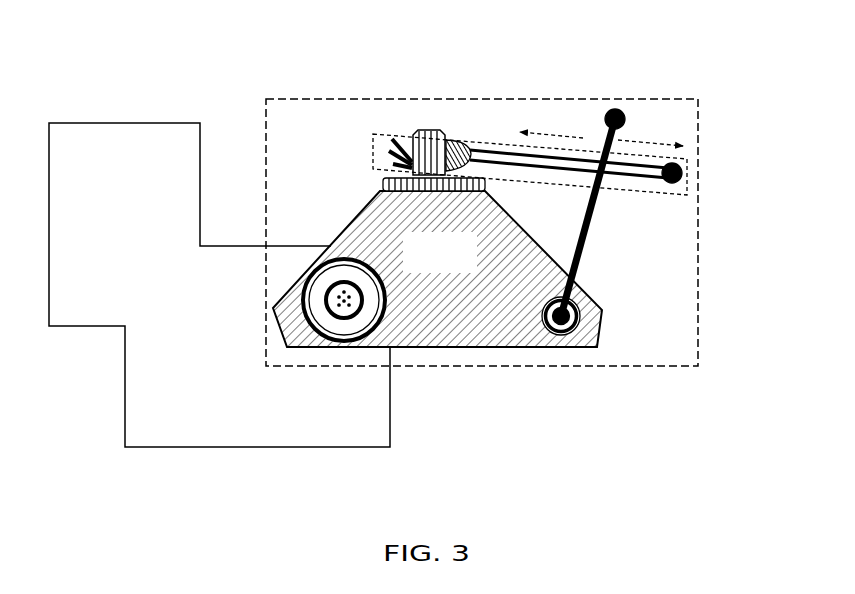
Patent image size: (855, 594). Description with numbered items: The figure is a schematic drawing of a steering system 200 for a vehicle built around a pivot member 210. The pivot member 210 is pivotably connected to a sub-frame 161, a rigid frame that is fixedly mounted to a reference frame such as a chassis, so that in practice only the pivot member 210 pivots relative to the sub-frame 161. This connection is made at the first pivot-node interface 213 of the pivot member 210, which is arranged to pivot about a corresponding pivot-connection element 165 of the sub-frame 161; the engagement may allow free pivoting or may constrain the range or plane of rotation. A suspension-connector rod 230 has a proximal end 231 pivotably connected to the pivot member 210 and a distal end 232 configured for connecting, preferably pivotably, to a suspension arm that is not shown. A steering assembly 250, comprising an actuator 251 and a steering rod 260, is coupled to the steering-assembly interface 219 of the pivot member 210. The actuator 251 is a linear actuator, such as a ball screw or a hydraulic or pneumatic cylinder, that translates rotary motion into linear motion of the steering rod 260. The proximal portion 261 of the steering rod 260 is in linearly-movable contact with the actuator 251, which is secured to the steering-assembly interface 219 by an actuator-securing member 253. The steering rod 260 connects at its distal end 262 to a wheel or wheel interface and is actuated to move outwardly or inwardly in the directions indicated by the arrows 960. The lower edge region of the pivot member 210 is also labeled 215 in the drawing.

The steering system 200 is at (327, 98).
The sub-frame 161 is at (210, 371).
The pivot member 210 is at (462, 269).
The first pivot-node interface 213 is at (292, 304).
The pivot-connection element 165 is at (342, 326).
The bottom edge 215 is at (548, 340).
The steering-assembly interface 219 is at (380, 182).
The actuator 251 is at (384, 146).
The actuator-securing member 253 is at (428, 126).
The proximal portion of the steering rod 261 is at (480, 144).
The steering rod 260 is at (533, 169).
The distal end of the steering rod 262 is at (680, 168).
The steering assembly 250 is at (658, 197).
The arrows indicating steering rod movement directions 960 is at (658, 120).
The suspension-connector rod 230 is at (582, 261).
The distal end of the suspension-connector rod 232 is at (612, 107).
The proximal end of the suspension-connector rod 231 is at (602, 323).